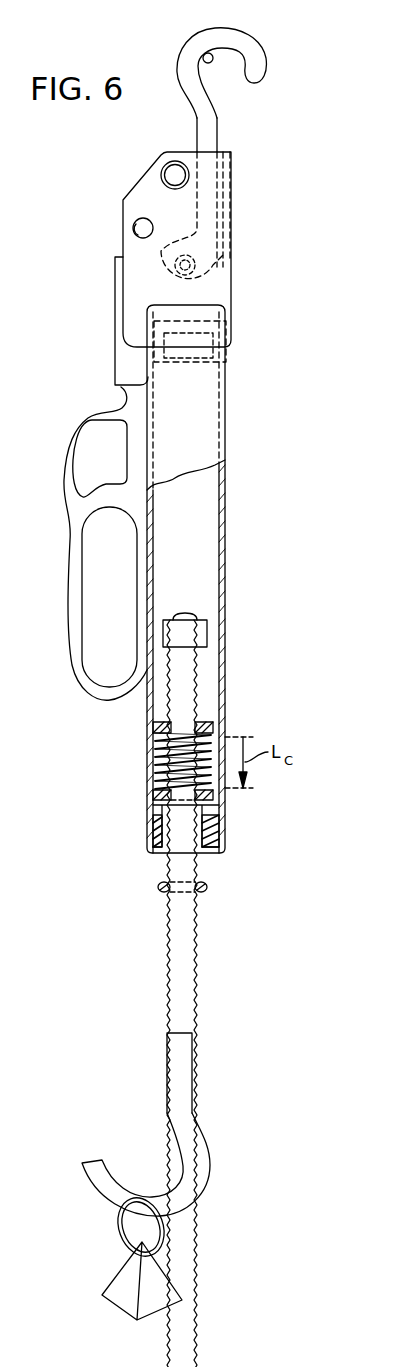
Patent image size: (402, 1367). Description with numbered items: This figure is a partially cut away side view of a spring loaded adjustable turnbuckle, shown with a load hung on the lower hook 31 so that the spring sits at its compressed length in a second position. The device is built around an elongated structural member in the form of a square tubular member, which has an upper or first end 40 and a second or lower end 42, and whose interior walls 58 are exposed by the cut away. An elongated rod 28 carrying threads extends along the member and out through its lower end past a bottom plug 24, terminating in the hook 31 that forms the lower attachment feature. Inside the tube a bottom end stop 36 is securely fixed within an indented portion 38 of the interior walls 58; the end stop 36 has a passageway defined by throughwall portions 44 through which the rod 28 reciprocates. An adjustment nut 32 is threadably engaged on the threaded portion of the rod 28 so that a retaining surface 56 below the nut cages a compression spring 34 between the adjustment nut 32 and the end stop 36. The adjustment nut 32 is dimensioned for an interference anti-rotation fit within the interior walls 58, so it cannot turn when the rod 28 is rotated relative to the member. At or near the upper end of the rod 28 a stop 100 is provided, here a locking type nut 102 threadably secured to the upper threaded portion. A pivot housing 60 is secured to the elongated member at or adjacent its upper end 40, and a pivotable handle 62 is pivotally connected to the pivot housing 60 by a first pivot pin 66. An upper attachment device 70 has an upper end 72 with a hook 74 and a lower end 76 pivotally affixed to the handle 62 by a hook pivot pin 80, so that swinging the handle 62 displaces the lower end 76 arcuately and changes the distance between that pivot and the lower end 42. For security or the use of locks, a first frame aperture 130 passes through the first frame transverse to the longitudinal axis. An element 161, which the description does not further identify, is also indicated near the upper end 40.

The bottom plug 24 is at (196, 853).
The elongated rod 28 is at (192, 1068).
The hook 31 is at (160, 1193).
The adjustment nut 32 is at (210, 730).
The compression spring 34 is at (153, 762).
The bottom end stop 36 is at (210, 795).
The indented portion 38 is at (150, 793).
The upper end 40 is at (193, 336).
The lower end 42 is at (216, 847).
The throughwall portions 44 is at (152, 810).
The retaining surface 56 is at (150, 722).
The interior walls 58 is at (203, 680).
The pivot housing 60 is at (233, 276).
The pivotable handle 62 is at (124, 389).
The first pivot pin 66 is at (172, 170).
The upper attachment device 70 is at (215, 120).
The upper end 72 is at (235, 30).
The hook 74 is at (203, 56).
The lower end 76 is at (160, 285).
The hook pivot pin 80 is at (192, 265).
The stop 100 is at (185, 611).
The locking nut 102 is at (207, 628).
The first frame aperture 130 is at (134, 230).
The connection region 161 is at (203, 315).